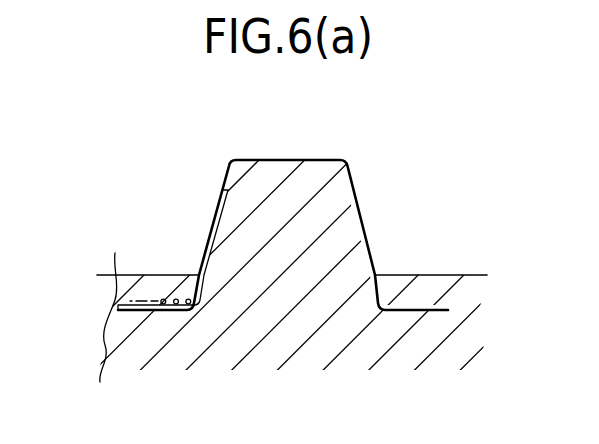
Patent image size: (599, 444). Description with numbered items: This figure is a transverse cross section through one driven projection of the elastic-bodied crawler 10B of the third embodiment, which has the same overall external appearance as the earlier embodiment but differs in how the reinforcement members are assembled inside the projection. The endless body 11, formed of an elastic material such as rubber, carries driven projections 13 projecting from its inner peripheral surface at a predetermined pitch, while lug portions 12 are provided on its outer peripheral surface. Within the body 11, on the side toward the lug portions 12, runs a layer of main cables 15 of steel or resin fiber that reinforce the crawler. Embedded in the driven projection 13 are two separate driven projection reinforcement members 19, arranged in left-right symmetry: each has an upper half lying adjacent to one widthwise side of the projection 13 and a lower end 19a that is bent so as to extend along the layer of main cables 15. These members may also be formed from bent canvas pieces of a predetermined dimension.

The elastic-bodied crawler 10B is at (420, 203).
The endless body 11 is at (157, 275).
The lug portion 12 is at (98, 346).
The driven projection 13 is at (322, 160).
The main cable 15 is at (104, 270).
The driven projection reinforcement member 19 is at (214, 220).
The lower end 19a is at (162, 313).